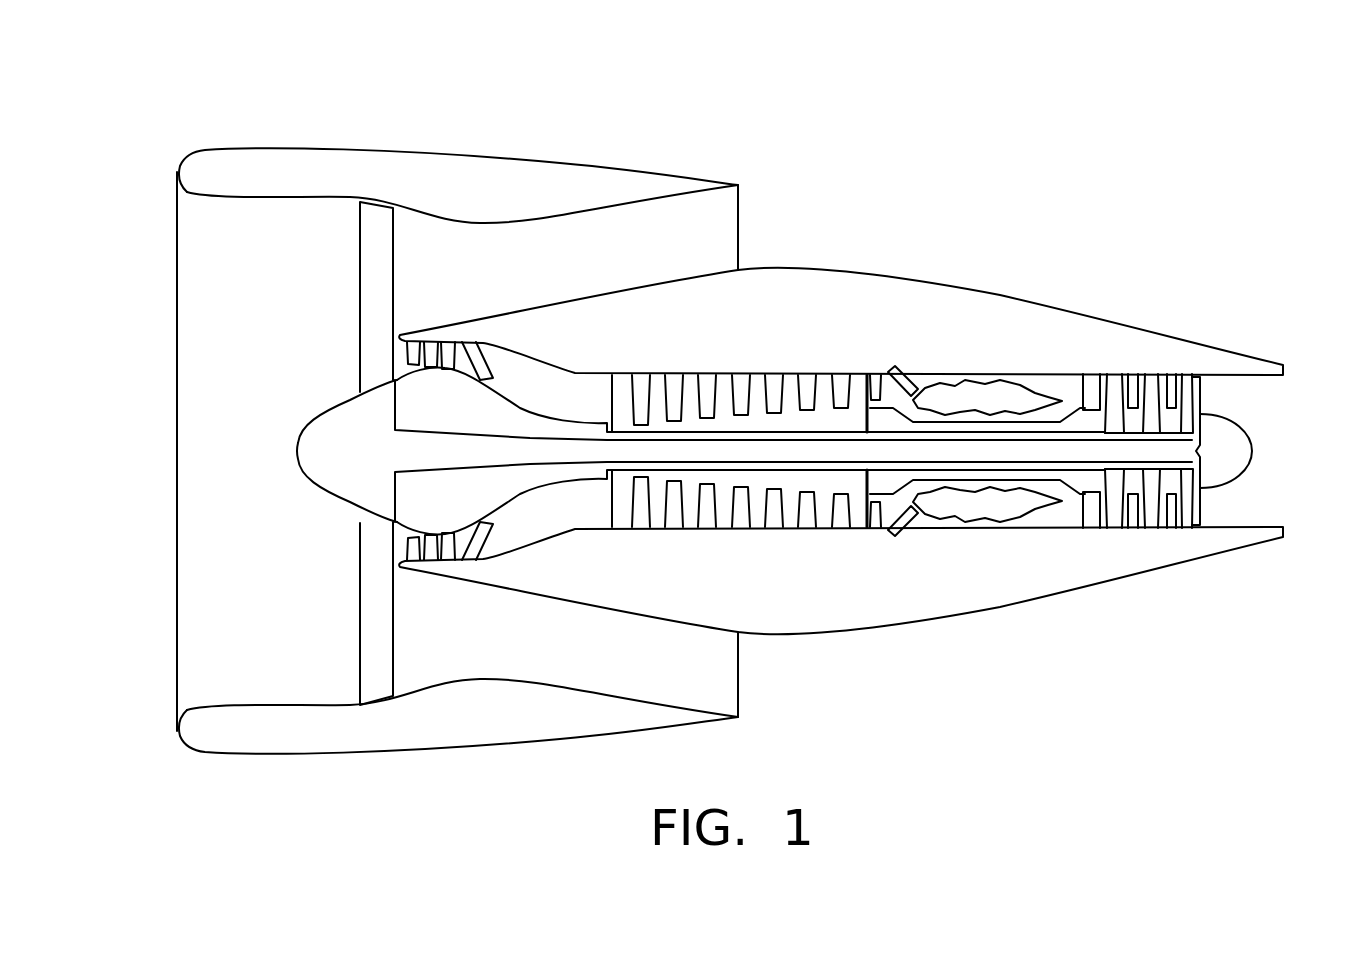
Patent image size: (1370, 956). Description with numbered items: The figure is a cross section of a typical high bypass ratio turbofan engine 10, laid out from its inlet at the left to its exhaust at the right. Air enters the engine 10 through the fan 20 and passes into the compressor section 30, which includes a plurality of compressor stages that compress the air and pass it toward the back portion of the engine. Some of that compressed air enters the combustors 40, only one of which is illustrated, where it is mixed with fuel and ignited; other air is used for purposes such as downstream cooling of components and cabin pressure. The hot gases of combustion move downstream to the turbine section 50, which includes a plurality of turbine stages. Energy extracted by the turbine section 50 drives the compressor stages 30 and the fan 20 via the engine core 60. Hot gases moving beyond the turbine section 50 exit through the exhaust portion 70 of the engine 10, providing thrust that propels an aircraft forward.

The high bypass ratio turbofan engine 10 is at (250, 88).
The fan 20 is at (358, 620).
The compressor section 30 is at (715, 378).
The combustors 40 is at (972, 395).
The turbine section 50 is at (1130, 375).
The engine core 60 is at (335, 455).
The exhaust portion 70 is at (1305, 395).